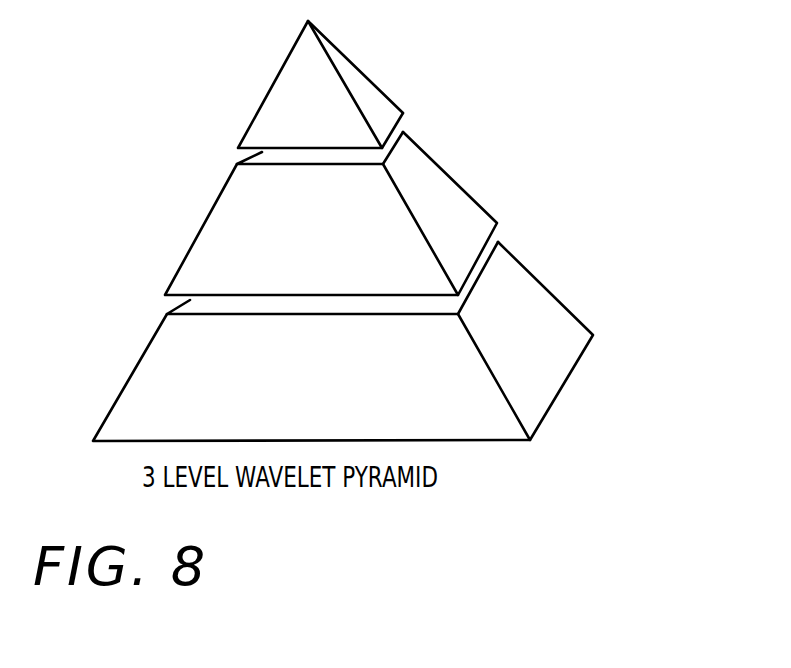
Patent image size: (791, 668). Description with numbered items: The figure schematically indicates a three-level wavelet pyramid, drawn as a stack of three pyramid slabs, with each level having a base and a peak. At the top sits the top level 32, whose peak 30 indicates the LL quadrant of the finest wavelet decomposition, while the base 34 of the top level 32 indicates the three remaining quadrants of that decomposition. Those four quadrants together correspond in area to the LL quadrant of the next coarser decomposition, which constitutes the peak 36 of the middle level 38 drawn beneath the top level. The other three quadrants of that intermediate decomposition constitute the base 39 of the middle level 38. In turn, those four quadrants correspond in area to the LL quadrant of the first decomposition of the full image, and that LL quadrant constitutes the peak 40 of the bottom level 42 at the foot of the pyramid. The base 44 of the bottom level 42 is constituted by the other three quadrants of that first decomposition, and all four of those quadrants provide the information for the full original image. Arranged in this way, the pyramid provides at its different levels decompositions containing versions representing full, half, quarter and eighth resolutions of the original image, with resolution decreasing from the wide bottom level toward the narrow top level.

The peak of the top level 30 is at (293, 47).
The top level 32 is at (365, 92).
The base of the top level 34 is at (403, 113).
The peak of the middle level 36 is at (271, 170).
The middle level 38 is at (422, 203).
The base of the middle level 39 is at (497, 223).
The peak of the bottom level 40 is at (203, 318).
The bottom level 42 is at (518, 313).
The base of the bottom level 44 is at (482, 443).